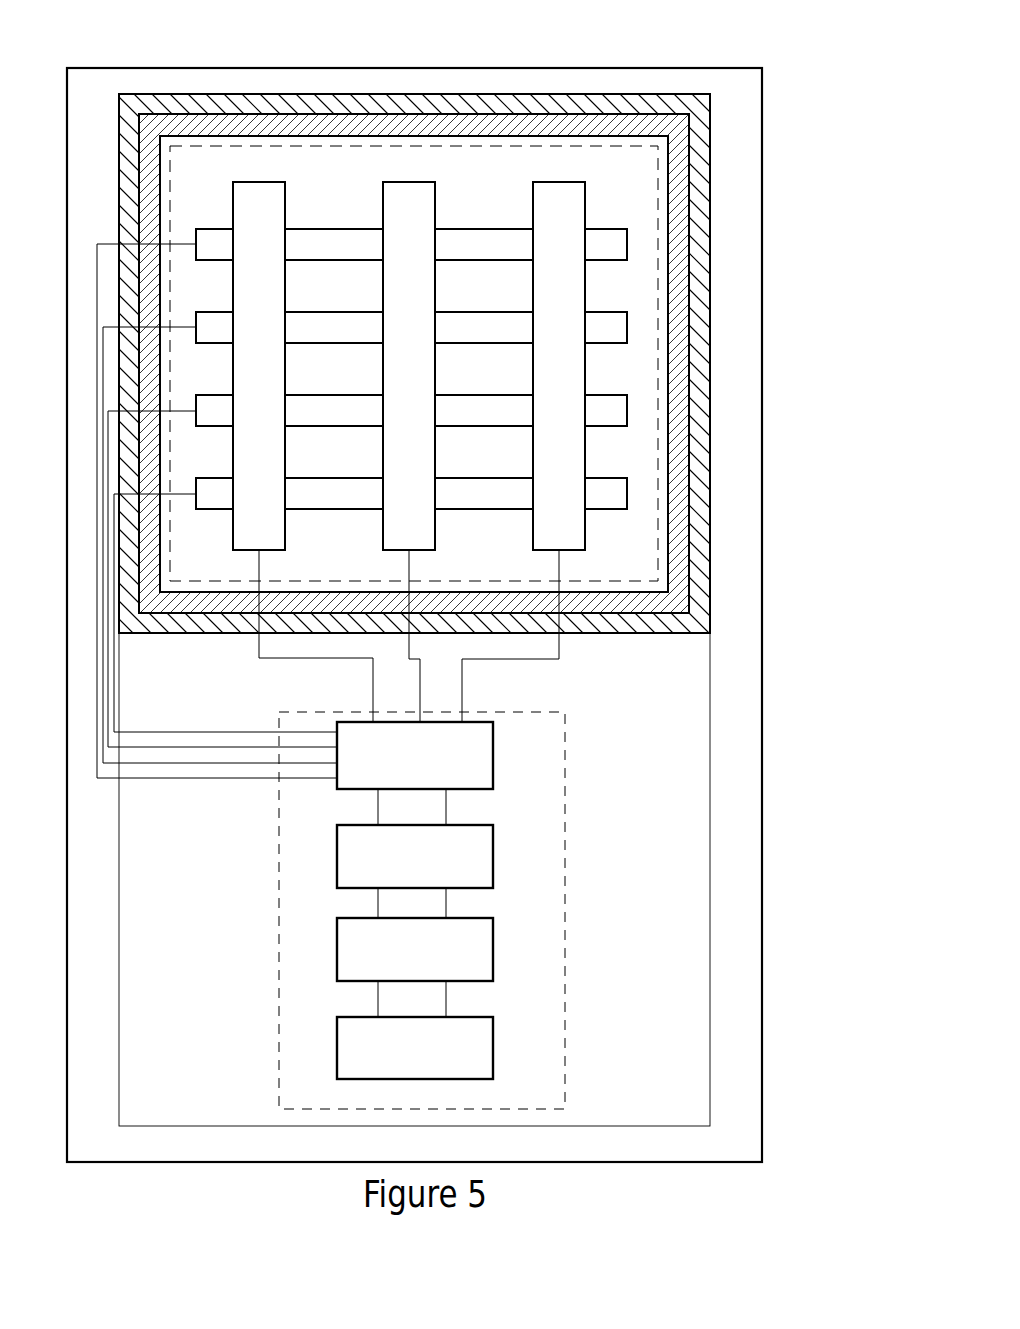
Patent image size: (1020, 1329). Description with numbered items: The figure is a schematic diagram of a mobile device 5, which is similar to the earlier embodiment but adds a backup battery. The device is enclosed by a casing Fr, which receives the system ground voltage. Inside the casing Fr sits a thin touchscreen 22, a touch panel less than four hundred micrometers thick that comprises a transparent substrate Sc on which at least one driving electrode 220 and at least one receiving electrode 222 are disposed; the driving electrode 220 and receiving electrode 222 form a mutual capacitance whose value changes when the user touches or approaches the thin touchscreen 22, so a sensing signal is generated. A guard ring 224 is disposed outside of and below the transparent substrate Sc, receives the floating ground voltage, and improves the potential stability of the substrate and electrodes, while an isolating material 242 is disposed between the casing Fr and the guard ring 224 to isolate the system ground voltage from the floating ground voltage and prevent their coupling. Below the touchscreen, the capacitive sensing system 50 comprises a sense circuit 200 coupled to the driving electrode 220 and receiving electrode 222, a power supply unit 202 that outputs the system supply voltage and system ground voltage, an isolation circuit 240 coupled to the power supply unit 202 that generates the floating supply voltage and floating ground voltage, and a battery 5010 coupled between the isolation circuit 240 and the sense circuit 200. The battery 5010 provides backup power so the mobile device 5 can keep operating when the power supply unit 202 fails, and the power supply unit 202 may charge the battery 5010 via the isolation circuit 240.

The mobile device 5 is at (438, 585).
The casing Fr is at (762, 83).
The thin touchscreen 22 is at (464, 331).
The guard ring 224 is at (568, 120).
The isolating material 242 is at (608, 105).
The transparent substrate Sc is at (638, 147).
The driving electrode 220 is at (241, 216).
The receiving electrode 222 is at (473, 257).
The capacitive sensing system 50 is at (443, 904).
The sense circuit 200 is at (493, 755).
The battery 5010 is at (493, 857).
The isolation circuit 240 is at (493, 949).
The power supply unit 202 is at (493, 1039).